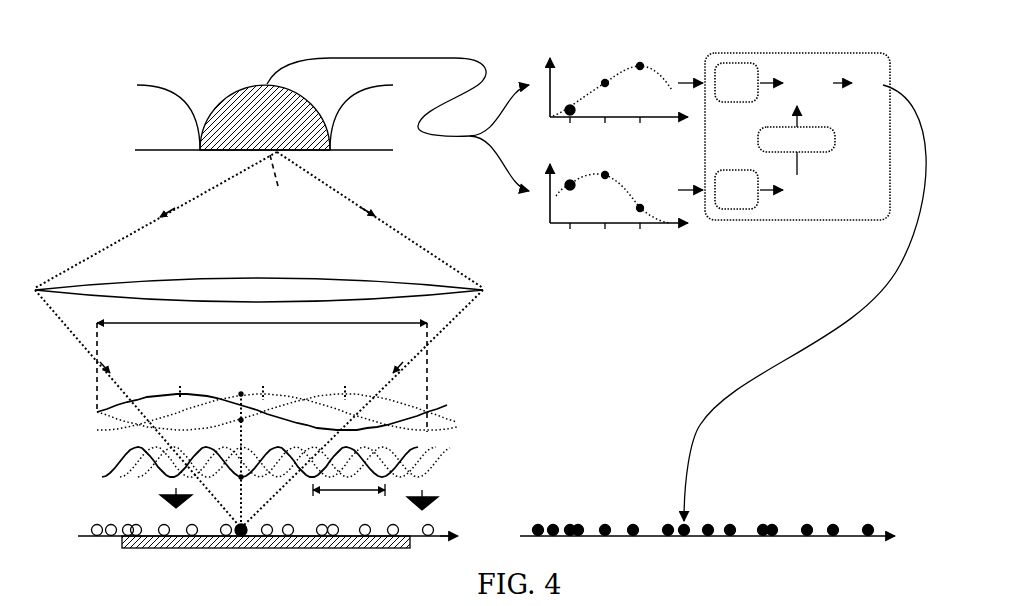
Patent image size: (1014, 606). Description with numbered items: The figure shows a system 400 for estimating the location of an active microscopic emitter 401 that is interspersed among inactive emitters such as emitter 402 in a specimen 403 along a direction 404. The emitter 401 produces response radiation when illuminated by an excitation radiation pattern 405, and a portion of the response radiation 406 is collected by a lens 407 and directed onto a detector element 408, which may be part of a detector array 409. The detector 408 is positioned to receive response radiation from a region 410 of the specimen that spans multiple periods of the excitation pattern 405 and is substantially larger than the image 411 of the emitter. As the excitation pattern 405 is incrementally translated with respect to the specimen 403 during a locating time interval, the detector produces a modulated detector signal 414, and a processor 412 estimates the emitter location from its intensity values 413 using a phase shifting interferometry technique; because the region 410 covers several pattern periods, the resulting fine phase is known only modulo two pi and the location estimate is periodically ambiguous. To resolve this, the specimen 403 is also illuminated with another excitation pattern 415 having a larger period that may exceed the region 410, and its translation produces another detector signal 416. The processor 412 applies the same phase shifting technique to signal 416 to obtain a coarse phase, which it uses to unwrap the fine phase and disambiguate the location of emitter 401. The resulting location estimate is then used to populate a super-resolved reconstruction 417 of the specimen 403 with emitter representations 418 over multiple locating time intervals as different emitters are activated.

The system 400 is at (96, 175).
The active emitter 401 is at (244, 527).
The inactive emitter 402 is at (432, 528).
The specimen 403 is at (87, 535).
The direction 404 is at (454, 540).
The excitation radiation pattern 405 is at (118, 472).
The response radiation 406 is at (451, 312).
The lens 407 is at (484, 290).
The detector element 408 is at (257, 127).
The detector array 409 is at (221, 84).
The region 410 is at (258, 549).
The image of the emitter 411 is at (281, 176).
The processor 412 is at (799, 53).
The intensity values 413 is at (604, 83).
The modulated detector signal 414 is at (639, 49).
The second excitation pattern 415 is at (447, 404).
The second detector signal 416 is at (629, 187).
The super-resolved reconstruction 417 is at (530, 535).
The emitter representations 418 is at (685, 528).